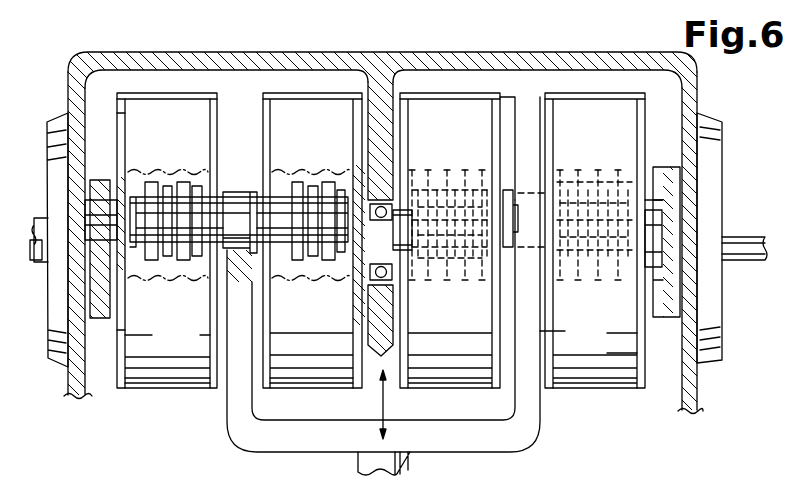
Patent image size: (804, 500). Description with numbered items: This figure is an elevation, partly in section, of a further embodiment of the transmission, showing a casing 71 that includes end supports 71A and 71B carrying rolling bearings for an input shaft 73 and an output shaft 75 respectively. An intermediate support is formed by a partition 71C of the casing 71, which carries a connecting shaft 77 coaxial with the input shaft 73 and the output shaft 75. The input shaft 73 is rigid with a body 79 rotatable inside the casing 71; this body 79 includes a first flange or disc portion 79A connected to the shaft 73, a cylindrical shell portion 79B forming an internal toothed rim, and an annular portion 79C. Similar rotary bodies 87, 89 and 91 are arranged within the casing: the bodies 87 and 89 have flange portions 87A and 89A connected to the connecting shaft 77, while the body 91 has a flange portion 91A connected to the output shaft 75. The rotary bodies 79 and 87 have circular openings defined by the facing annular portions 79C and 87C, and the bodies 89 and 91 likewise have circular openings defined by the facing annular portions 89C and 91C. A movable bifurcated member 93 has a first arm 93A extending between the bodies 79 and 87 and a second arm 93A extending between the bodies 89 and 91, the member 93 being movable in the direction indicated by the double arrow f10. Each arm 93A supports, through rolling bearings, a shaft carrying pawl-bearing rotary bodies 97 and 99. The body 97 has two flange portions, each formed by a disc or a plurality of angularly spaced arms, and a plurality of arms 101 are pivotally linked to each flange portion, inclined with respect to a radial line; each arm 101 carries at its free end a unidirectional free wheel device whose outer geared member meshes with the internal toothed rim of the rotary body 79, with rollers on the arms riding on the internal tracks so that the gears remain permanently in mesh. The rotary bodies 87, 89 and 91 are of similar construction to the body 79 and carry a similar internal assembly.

The casing 71 is at (162, 60).
The end support 71A is at (100, 320).
The end support 71B is at (700, 334).
The partition 71C is at (380, 83).
The input shaft 73 is at (36, 262).
The output shaft 75 is at (745, 232).
The connecting shaft 77 is at (383, 250).
The rotary body 79 is at (150, 392).
The flange portion 79A is at (116, 113).
The cylindrical shell portion 79B is at (191, 385).
The annular portion 79C is at (215, 105).
The rotary body 87 is at (304, 86).
The flange portion 87A is at (368, 262).
The annular portion 87C is at (272, 350).
The rotary body 89 is at (442, 86).
The flange portion 89A is at (408, 125).
The annular portion 89C is at (518, 103).
The rotary body 91 is at (582, 88).
The flange portion 91A is at (638, 132).
The annular portion 91C is at (543, 146).
The movable bifurcated member 93 is at (352, 459).
The arm 93A is at (240, 350).
The rotary body 97 is at (183, 263).
The rotary body 99 is at (300, 170).
The arm 101 is at (168, 190).
The double arrow f10 is at (385, 402).